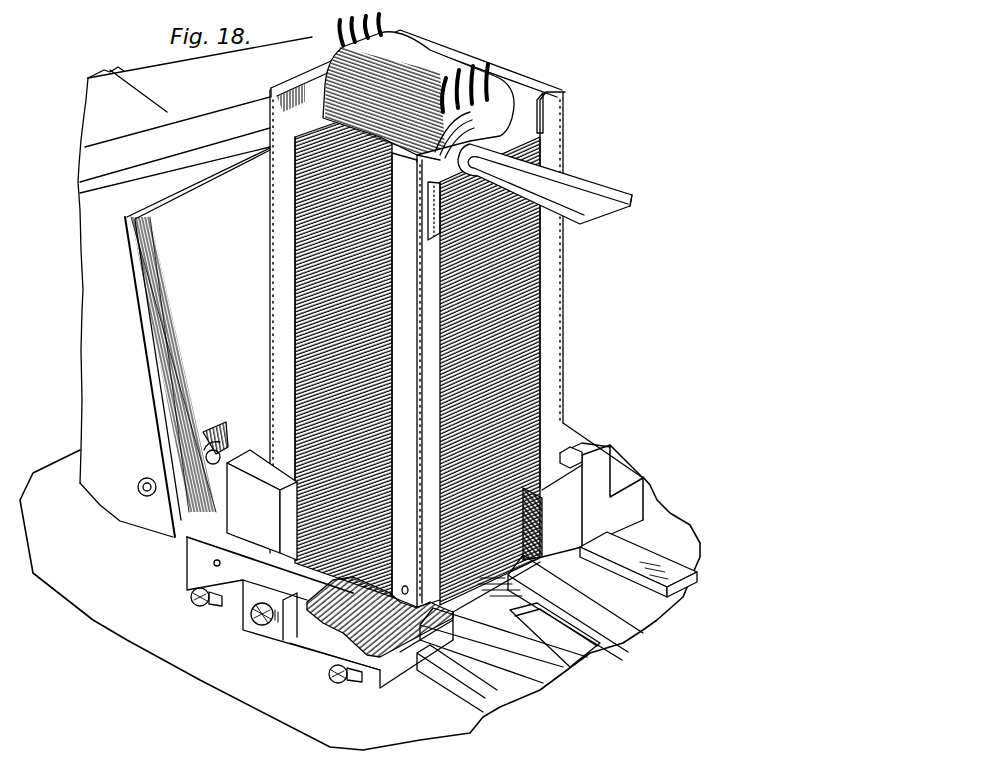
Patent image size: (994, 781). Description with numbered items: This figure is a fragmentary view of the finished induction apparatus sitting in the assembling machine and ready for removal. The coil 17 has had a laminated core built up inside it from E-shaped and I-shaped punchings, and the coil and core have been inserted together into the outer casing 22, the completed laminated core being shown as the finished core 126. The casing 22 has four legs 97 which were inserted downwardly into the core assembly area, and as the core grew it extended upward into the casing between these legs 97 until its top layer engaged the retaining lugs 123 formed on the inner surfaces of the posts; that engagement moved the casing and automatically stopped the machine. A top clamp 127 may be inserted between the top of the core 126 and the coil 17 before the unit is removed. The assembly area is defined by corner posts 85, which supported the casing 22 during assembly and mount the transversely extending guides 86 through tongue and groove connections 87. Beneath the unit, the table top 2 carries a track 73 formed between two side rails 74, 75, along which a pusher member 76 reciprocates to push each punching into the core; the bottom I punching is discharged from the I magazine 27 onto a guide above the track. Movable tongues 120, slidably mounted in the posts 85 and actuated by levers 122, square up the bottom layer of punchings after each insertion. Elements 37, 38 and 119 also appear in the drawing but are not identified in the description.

The table top 2 is at (363, 727).
The coil 17 is at (433, 65).
The casing 22 is at (555, 112).
The I magazine 27 is at (205, 133).
The hinge pivot 37 is at (223, 440).
The ring 38 is at (142, 490).
The track 73 is at (530, 688).
The side rail 74 is at (497, 702).
The side rail 75 is at (642, 555).
The pusher member 76 is at (627, 615).
The corner post 85 is at (260, 510).
The guide 86 is at (575, 513).
The tongue and groove connection 87 is at (583, 443).
The leg 97 is at (563, 360).
The screw 119 is at (257, 627).
The tongue 120 is at (213, 607).
The lever 122 is at (417, 159).
The retaining lug 123 is at (543, 82).
The finished core 126 is at (520, 305).
The top clamp 127 is at (577, 183).